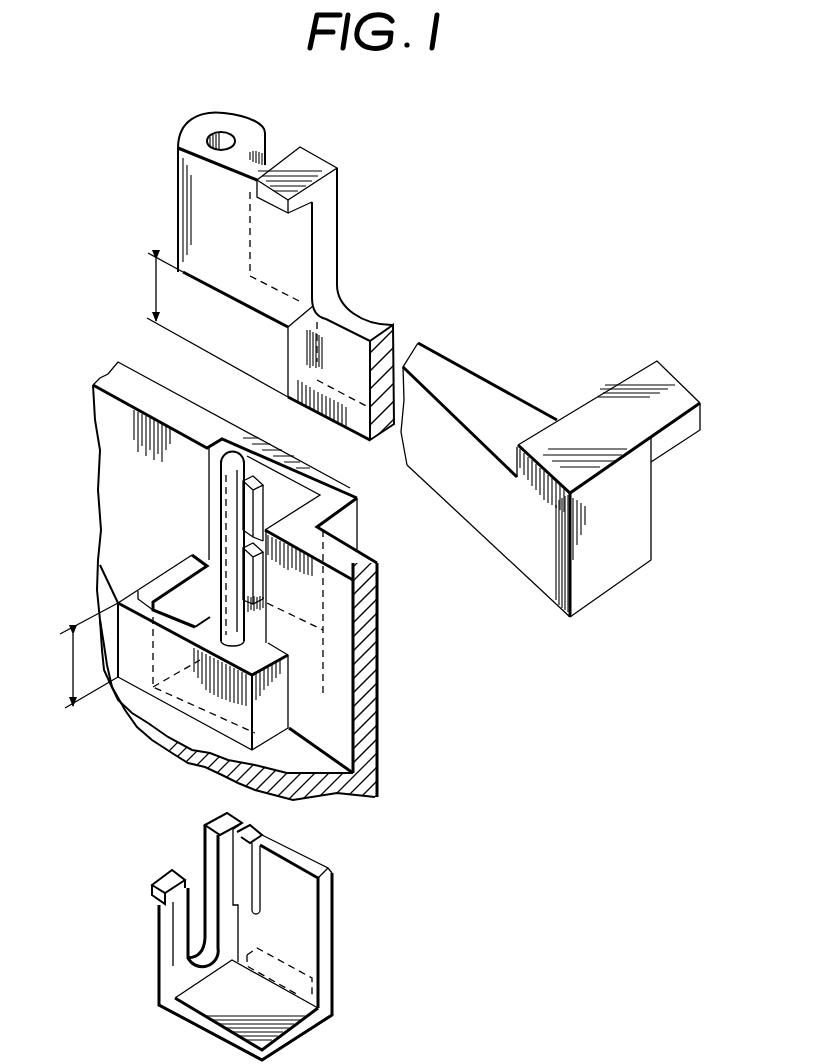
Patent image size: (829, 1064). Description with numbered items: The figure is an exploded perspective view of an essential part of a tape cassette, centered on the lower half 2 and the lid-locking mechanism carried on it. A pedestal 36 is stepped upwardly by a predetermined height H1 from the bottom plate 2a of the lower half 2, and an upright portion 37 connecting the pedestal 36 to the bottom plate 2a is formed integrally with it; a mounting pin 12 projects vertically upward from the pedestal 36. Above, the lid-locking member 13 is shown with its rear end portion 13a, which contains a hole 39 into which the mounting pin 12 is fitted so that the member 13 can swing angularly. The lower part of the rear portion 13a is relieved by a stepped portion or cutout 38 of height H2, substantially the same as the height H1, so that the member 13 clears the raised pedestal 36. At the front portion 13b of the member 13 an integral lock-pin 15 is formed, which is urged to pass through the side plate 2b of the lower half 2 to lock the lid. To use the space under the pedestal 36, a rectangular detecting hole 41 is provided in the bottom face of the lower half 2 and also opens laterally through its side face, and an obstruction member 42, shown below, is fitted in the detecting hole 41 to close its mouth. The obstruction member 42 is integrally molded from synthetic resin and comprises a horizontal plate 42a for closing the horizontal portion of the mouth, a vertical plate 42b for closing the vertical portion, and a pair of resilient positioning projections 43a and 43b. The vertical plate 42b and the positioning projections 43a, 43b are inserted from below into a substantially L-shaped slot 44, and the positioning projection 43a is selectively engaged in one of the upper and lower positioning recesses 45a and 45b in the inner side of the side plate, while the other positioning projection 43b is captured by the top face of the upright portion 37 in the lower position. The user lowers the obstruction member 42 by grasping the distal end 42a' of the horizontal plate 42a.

The lower half 2 is at (396, 733).
The bottom plate 2a is at (368, 783).
The side plate 2b is at (113, 465).
The mounting pin 12 is at (233, 460).
The lid-locking member 13 is at (553, 316).
The rear end portion 13a is at (185, 212).
The front portion 13b is at (522, 527).
The lock-pin 15 is at (658, 380).
The pedestal 36 is at (210, 617).
The upright portion 37 is at (118, 603).
The stepped portion 38 is at (297, 371).
The hole 39 is at (218, 133).
The detecting hole 41 is at (213, 696).
The obstruction member 42 is at (386, 905).
The horizontal plate 42a is at (298, 1032).
The distal end 42a' is at (346, 977).
The vertical plate 42b is at (300, 937).
The positioning projection 43a is at (262, 828).
The positioning projection 43b is at (152, 888).
The L-shaped slot 44 is at (193, 557).
The upper positioning recess 45a is at (256, 482).
The lower positioning recess 45b is at (258, 549).
The height H1 is at (70, 682).
The height H2 is at (153, 290).